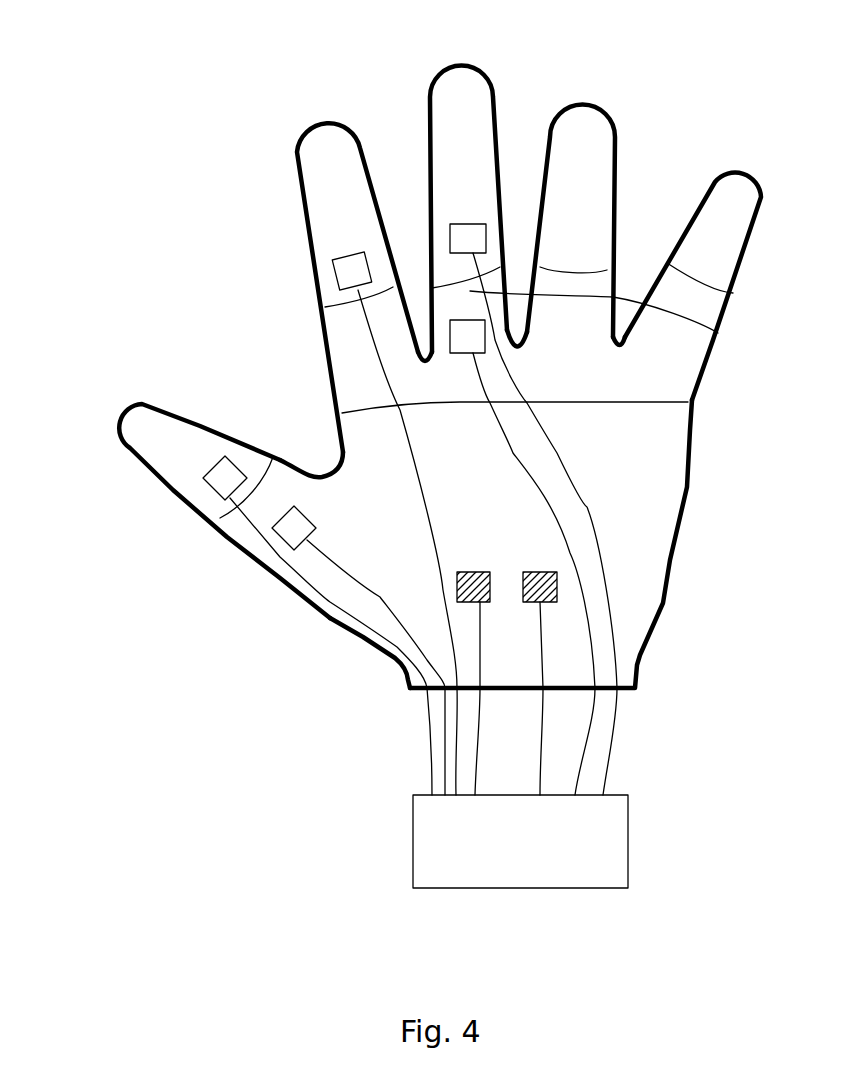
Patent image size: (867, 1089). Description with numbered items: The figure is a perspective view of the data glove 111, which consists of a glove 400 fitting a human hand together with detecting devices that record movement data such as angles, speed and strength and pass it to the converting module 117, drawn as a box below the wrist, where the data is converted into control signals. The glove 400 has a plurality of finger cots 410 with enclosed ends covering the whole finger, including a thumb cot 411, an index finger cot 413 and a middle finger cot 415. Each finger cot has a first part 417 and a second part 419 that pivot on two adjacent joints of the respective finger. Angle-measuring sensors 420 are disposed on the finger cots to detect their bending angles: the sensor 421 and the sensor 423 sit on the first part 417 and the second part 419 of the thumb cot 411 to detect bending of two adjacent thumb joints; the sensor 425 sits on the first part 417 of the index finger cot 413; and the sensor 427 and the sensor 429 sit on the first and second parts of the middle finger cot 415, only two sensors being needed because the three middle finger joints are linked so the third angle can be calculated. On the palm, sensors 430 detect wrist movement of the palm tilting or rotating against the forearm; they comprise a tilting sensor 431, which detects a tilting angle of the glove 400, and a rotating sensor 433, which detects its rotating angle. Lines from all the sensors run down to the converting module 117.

The data glove 111 is at (162, 38).
The glove 400 is at (667, 473).
The finger cots 410 is at (583, 117).
The thumb cot 411 is at (135, 447).
The index finger cot 413 is at (327, 143).
The middle finger cot 415 is at (462, 85).
The first part 417 is at (438, 190).
The second part 419 is at (717, 322).
The angle-measuring sensors 420 is at (238, 273).
The sensor 421 is at (230, 477).
The sensor 423 is at (297, 520).
The sensor 425 is at (333, 280).
The sensor 427 is at (465, 253).
The sensor 429 is at (450, 345).
The sensors 430 is at (550, 532).
The tilting sensor 431 is at (475, 570).
The rotating sensor 433 is at (542, 570).
The converting module 117 is at (600, 848).